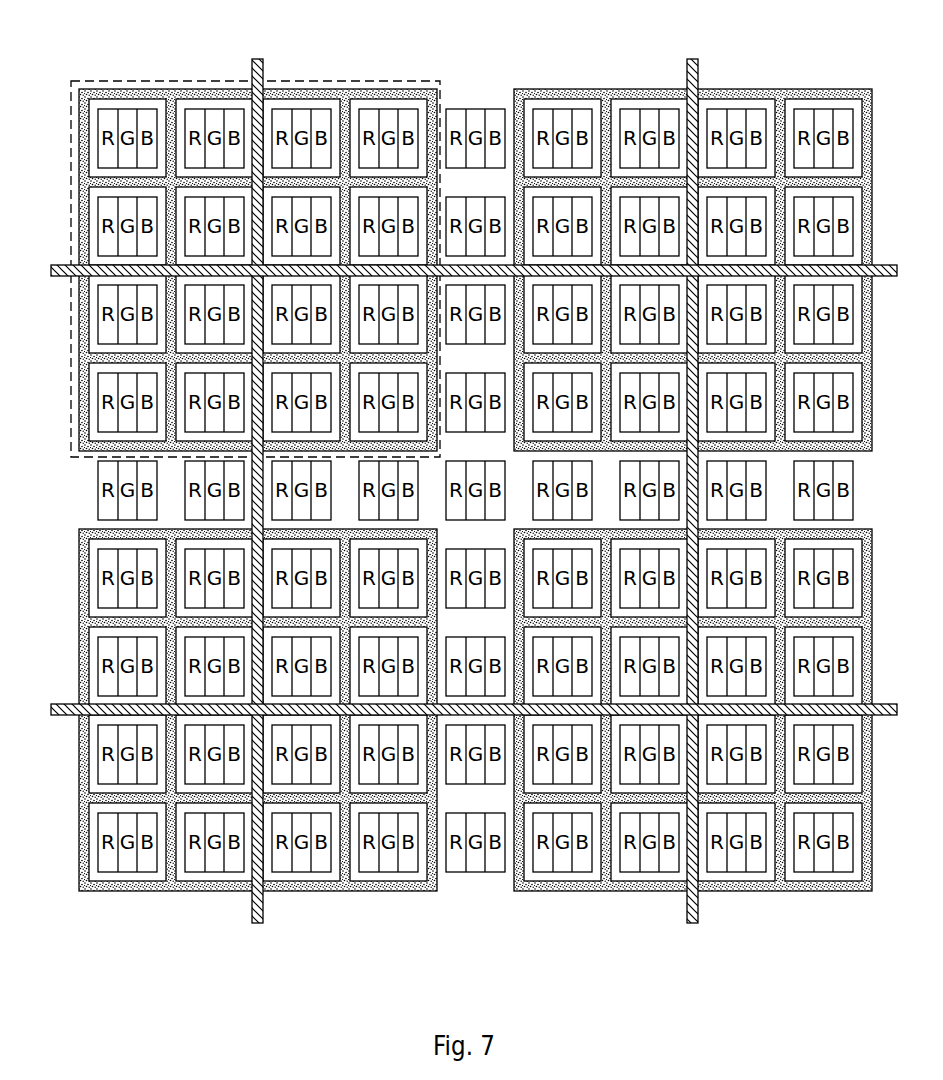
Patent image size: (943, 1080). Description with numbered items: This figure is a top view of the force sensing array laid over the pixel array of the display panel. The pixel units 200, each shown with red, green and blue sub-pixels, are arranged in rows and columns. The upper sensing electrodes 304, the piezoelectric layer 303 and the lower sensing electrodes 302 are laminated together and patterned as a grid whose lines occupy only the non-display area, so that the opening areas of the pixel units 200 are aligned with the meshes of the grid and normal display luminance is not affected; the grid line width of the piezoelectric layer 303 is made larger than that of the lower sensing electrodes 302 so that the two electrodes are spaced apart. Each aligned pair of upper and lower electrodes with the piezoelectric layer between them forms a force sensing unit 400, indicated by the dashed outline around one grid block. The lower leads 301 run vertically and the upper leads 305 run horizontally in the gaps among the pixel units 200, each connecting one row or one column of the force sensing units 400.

The force sensing unit 400 is at (140, 81).
The lower lead 301 is at (263, 66).
The upper sensing electrode 304 is at (475, 459).
The piezoelectric layer 303 is at (475, 459).
The lower sensing electrode 302 is at (373, 93).
The pixel unit 200 is at (484, 109).
The upper lead 305 is at (890, 272).